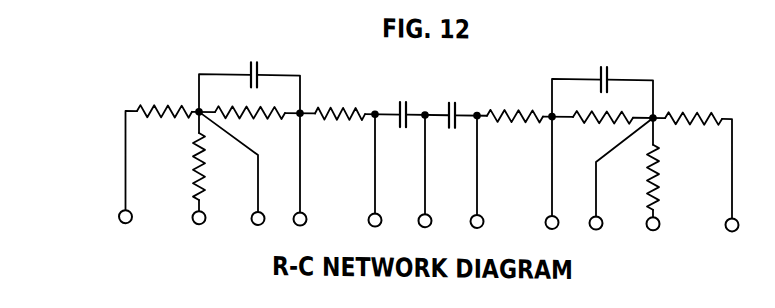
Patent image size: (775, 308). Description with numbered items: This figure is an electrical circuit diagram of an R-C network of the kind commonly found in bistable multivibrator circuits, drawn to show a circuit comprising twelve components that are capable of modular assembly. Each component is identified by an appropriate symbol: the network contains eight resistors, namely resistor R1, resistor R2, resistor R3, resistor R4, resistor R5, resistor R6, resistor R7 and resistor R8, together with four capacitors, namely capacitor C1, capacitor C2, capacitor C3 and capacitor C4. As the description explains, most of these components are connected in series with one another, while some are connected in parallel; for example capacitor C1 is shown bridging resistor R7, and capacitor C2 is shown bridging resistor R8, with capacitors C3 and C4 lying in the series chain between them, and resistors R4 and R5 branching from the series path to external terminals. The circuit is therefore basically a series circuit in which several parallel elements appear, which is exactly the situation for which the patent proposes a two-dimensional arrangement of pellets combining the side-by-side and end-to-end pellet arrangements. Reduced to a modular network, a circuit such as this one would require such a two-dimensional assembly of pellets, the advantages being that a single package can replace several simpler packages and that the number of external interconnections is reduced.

The resistor R1 is at (164, 101).
The resistor R2 is at (693, 109).
The resistor R3 is at (340, 103).
The resistor R4 is at (181, 166).
The resistor R5 is at (669, 178).
The resistor R6 is at (515, 106).
The resistor R7 is at (250, 122).
The resistor R8 is at (603, 127).
The capacitor C1 is at (255, 61).
The capacitor C2 is at (607, 66).
The capacitor C3 is at (403, 102).
The capacitor C4 is at (452, 103).